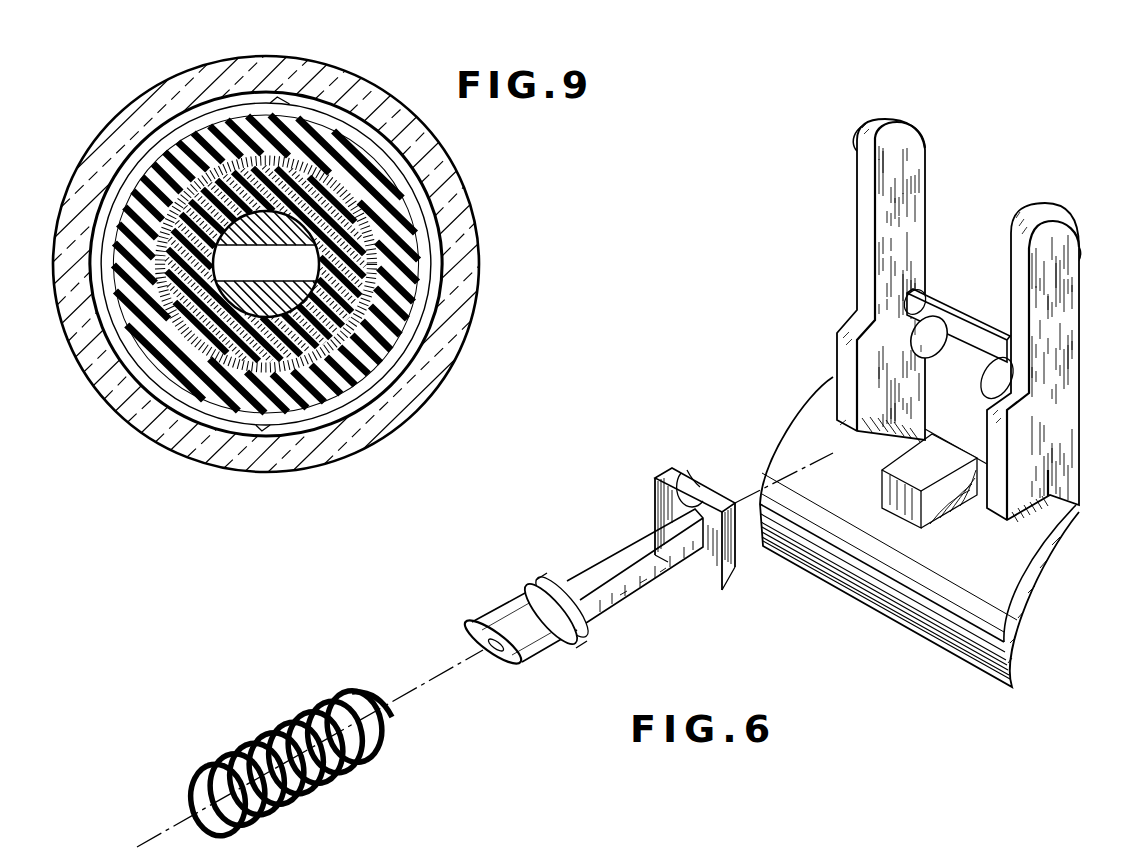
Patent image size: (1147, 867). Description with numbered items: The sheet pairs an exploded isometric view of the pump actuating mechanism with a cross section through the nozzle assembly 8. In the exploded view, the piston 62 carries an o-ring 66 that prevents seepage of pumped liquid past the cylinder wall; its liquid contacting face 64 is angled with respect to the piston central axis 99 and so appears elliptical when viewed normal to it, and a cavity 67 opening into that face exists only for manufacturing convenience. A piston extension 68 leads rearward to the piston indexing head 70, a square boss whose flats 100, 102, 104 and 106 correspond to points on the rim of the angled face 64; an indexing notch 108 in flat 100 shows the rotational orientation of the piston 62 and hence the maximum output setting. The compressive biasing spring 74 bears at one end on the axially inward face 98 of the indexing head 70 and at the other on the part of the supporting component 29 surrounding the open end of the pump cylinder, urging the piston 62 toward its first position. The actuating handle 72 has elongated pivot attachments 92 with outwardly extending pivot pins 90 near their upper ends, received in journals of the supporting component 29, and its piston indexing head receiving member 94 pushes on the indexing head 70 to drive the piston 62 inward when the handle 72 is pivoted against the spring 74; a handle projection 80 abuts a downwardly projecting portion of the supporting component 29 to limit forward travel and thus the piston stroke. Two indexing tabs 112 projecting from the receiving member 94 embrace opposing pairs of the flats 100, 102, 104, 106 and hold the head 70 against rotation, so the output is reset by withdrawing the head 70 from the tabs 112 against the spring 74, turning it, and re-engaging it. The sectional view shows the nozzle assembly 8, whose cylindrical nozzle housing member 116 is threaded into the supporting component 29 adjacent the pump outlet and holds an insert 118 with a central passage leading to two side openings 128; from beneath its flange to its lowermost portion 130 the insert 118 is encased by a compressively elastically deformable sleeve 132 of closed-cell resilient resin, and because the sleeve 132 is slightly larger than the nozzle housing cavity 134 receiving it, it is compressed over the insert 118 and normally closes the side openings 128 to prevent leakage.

In FIG. 9, the nozzle assembly 8 is at (327, 64).
In FIG. 9, the structural supporting component 29 is at (172, 74).
In FIG. 9, the cylindrical nozzle housing member 116 is at (380, 185).
In FIG. 9, the insert 118 is at (239, 187).
In FIG. 9, the side openings 128 is at (230, 265).
In FIG. 9, the lowermost portion of the insert 130 is at (236, 337).
In FIG. 9, the compressively elastically deformable sleeve 132 is at (384, 271).
In FIG. 9, the nozzle housing cavity 134 is at (378, 322).
In FIG. 6, the piston 62 is at (518, 632).
In FIG. 6, the liquid contacting face 64 is at (513, 658).
In FIG. 6, the o-ring 66 is at (580, 636).
In FIG. 6, the cavity 67 is at (493, 656).
In FIG. 6, the piston extension 68 is at (622, 548).
In FIG. 6, the piston indexing head 70 is at (691, 523).
In FIG. 6, the actuating handle 72 is at (850, 601).
In FIG. 6, the compressive biasing spring 74 is at (258, 737).
In FIG. 6, the handle projection 80 is at (880, 484).
In FIG. 6, the pivot pins 90 is at (858, 137).
In FIG. 6, the elongated pivot attachments 92 is at (857, 192).
In FIG. 6, the piston indexing head receiving member 94 is at (957, 331).
In FIG. 6, the axially inward face 98 is at (703, 574).
In FIG. 6, the piston central axis 99 is at (417, 679).
In FIG. 6, the flat 100 is at (729, 498).
In FIG. 6, the flat 102 is at (718, 588).
In FIG. 6, the flat 104 is at (655, 498).
In FIG. 6, the flat 106 is at (736, 556).
In FIG. 6, the indexing notch 108 is at (697, 487).
In FIG. 6, the indexing tabs 112 is at (928, 361).